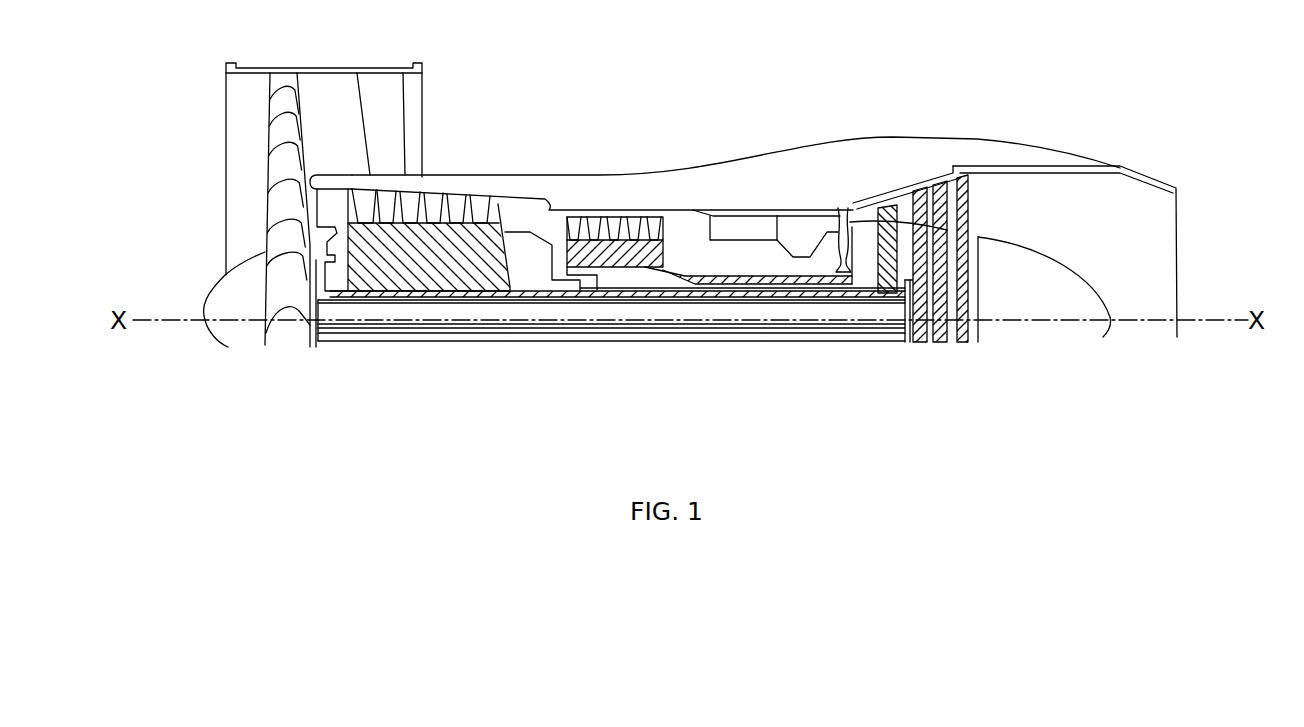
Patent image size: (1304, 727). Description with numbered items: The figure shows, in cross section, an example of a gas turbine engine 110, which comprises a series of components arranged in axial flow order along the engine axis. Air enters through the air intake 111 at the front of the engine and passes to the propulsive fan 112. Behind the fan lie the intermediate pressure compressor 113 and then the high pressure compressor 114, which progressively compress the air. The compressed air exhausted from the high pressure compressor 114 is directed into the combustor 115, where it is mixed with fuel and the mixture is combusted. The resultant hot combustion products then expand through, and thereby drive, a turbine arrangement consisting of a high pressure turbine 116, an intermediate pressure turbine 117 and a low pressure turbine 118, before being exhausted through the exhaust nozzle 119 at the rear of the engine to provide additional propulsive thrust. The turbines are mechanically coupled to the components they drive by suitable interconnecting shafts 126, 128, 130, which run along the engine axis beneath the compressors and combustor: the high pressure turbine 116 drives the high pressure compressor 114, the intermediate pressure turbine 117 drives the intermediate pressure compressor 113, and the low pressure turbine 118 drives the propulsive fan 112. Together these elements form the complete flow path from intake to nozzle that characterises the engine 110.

The gas turbine engine 110 is at (590, 95).
The air intake 111 is at (264, 187).
The propulsive fan 112 is at (293, 100).
The intermediate pressure compressor 113 is at (428, 238).
The high pressure compressor 114 is at (618, 215).
The combustor 115 is at (768, 192).
The high pressure turbine 116 is at (847, 206).
The intermediate pressure turbine 117 is at (888, 205).
The low pressure turbine 118 is at (957, 222).
The exhaust nozzle 119 is at (1163, 263).
The interconnecting shaft 126 is at (830, 275).
The interconnecting shaft 128 is at (567, 300).
The interconnecting shaft 130 is at (458, 345).